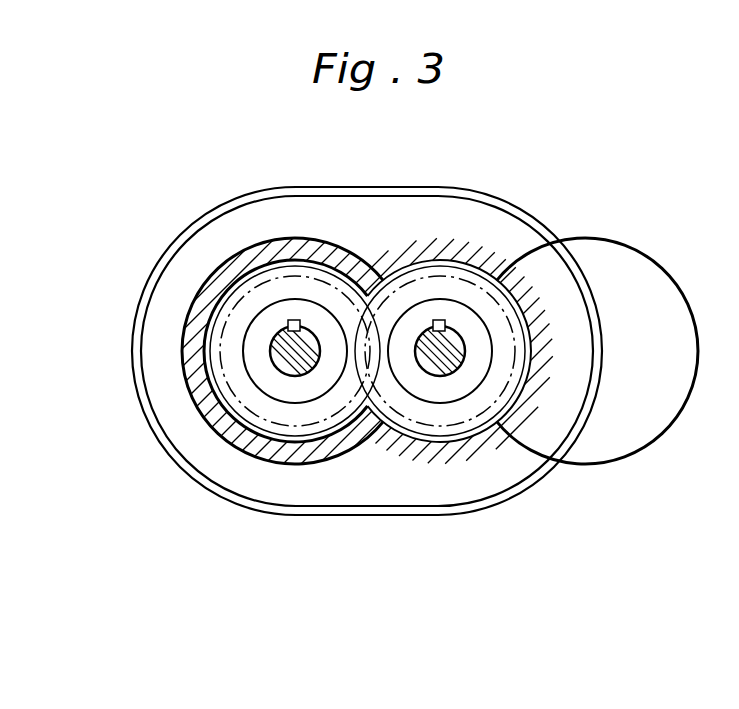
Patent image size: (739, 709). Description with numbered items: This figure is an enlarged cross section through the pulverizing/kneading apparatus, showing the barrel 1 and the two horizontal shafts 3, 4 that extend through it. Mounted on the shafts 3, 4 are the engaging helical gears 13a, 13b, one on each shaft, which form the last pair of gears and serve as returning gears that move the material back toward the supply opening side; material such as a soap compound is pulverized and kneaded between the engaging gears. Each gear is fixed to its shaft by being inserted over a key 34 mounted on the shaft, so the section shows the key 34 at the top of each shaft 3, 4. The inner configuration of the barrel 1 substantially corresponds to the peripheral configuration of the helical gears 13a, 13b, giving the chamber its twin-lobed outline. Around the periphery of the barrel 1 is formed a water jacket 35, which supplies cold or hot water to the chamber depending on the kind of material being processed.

The water jacket 35 is at (547, 230).
The barrel 1 is at (547, 317).
The key 34 is at (288, 327).
The shaft 3 is at (455, 363).
The shaft 4 is at (283, 362).
The helical gear 13a is at (483, 418).
The helical gear 13b is at (303, 432).